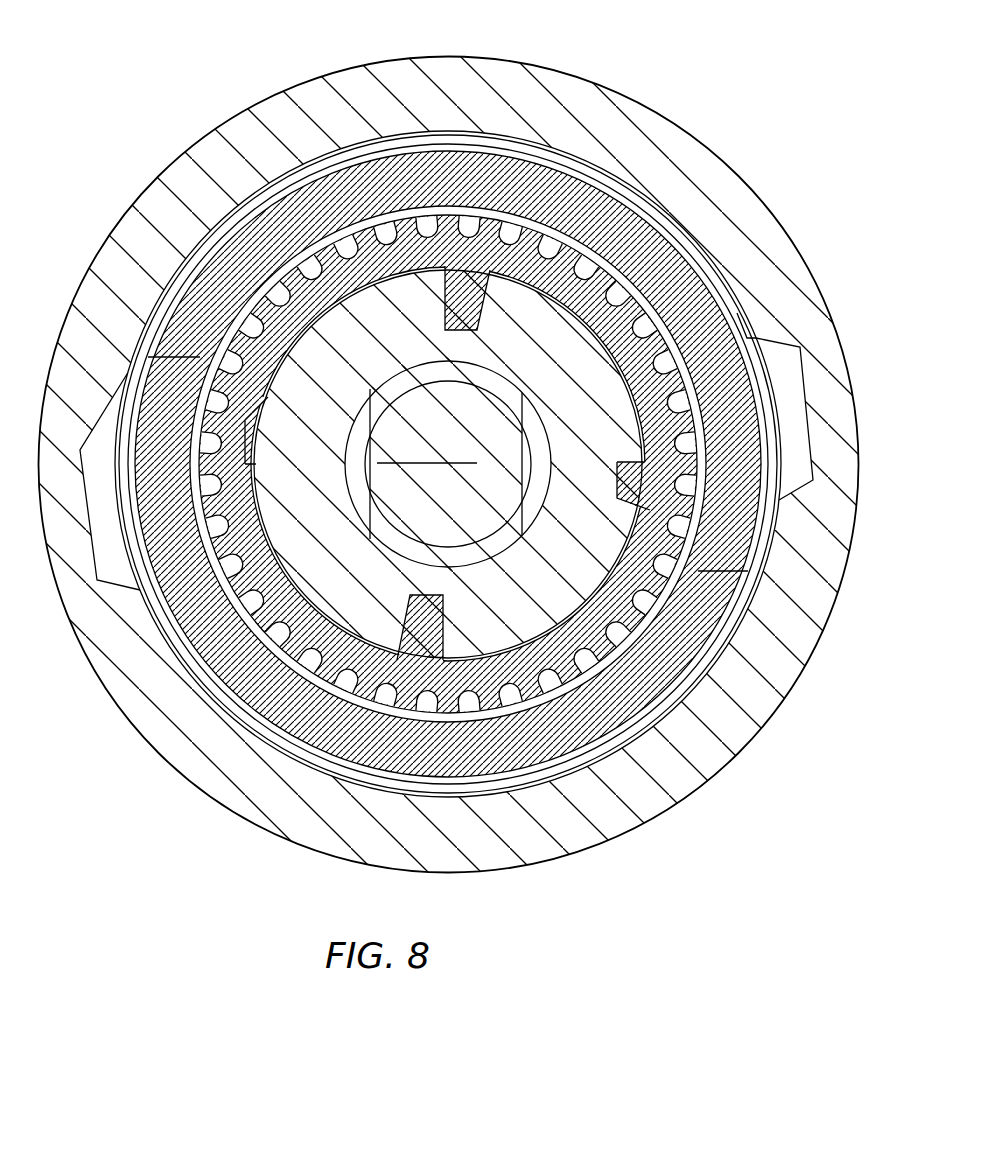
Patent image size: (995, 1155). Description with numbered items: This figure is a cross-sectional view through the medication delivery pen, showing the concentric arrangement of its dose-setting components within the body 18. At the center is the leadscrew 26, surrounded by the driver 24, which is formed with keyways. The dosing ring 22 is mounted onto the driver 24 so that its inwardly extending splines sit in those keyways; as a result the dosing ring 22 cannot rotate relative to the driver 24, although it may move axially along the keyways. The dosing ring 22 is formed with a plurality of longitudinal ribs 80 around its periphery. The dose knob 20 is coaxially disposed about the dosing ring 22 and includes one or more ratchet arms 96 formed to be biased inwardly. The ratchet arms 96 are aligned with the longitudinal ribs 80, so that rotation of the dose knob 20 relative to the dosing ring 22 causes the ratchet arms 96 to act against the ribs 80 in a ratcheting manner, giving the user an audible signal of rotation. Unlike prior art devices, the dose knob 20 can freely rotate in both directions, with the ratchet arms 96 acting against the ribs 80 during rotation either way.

The body 18 is at (608, 78).
The dose knob 20 is at (353, 148).
The dosing ring 22 is at (345, 297).
The driver 24 is at (574, 394).
The leadscrew 26 is at (435, 433).
The longitudinal ribs 80 is at (217, 347).
The ratchet arms 96 is at (217, 318).